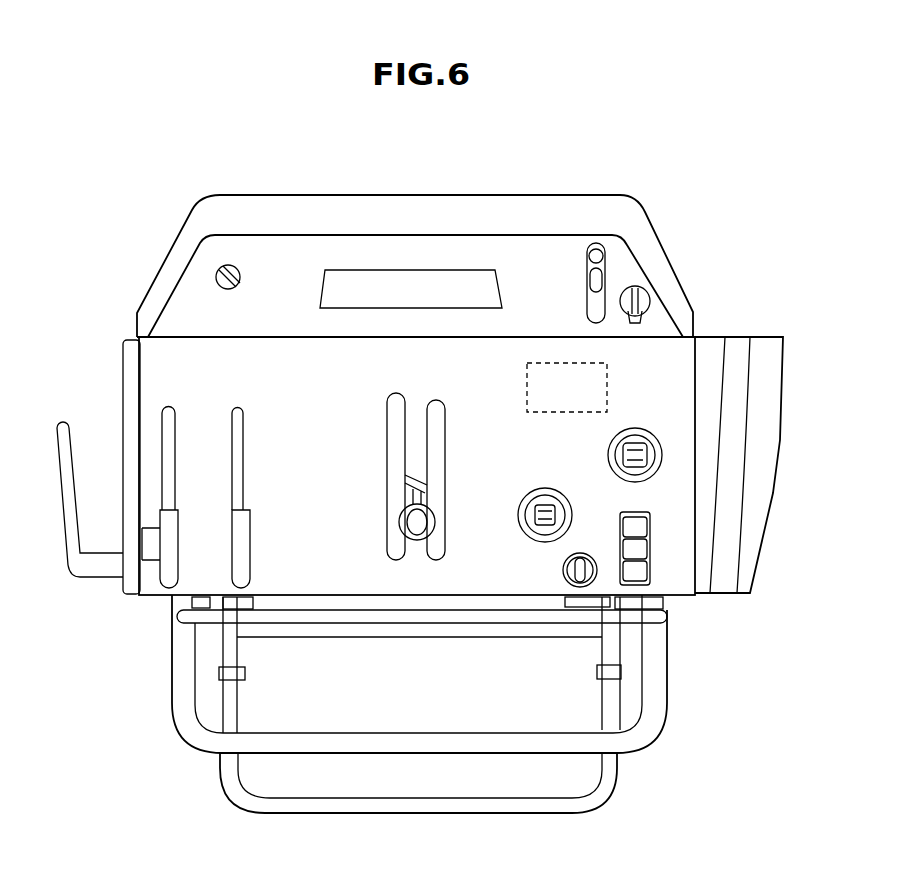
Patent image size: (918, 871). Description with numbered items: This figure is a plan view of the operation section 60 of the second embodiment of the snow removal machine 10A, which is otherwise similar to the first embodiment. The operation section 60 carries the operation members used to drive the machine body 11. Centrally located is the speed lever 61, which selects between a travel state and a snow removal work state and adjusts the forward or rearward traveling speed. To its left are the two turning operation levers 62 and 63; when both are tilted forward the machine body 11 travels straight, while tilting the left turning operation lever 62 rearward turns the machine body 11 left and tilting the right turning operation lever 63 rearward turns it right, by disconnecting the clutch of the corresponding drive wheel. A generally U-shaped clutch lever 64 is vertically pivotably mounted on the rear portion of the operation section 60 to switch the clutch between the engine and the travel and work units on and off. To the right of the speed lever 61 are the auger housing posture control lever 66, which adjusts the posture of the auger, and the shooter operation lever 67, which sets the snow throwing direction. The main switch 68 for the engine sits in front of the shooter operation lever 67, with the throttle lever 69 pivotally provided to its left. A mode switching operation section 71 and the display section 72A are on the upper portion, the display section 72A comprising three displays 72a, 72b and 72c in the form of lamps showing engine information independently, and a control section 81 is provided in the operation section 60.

The snow removal machine 10A is at (143, 83).
The machine body 11 is at (177, 238).
The operation section 60 is at (155, 645).
The speed lever 61 is at (437, 530).
The left turning operation lever 62 is at (162, 437).
The right turning operation lever 63 is at (245, 450).
The clutch lever 64 is at (412, 757).
The auger housing posture control lever 66 is at (550, 507).
The shooter operation lever 67 is at (635, 433).
The main switch 68 is at (647, 292).
The throttle lever 69 is at (597, 243).
The mode switching operation section 71 is at (579, 588).
The display section 72A is at (752, 610).
The display 72a is at (652, 575).
The display 72b is at (652, 552).
The display 72c is at (650, 530).
The control section 81 is at (563, 363).